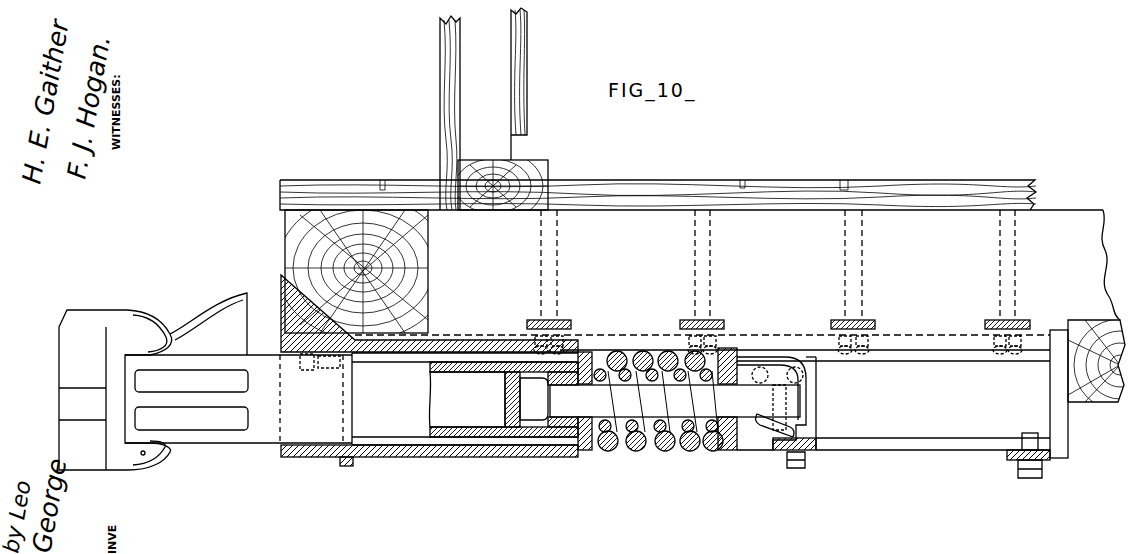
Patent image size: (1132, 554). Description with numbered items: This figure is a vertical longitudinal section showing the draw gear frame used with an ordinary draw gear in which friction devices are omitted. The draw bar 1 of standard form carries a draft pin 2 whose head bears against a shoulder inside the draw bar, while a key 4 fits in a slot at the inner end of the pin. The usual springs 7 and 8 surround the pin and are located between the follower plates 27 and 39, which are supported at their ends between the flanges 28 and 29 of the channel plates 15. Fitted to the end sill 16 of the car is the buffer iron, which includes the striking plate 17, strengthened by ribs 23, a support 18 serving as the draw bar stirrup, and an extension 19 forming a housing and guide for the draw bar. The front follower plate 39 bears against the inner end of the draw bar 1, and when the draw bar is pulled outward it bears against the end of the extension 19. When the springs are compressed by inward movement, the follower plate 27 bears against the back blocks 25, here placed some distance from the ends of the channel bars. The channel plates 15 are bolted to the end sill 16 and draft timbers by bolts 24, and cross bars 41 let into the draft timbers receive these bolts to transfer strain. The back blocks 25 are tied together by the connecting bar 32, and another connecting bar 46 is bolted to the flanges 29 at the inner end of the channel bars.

The draw bar 1 is at (465, 399).
The draft pin 2 is at (675, 401).
The key 4 is at (757, 378).
The spring 7 is at (624, 447).
The spring 8 is at (664, 452).
The channel plate 15 is at (855, 403).
The end sill 16 is at (363, 268).
The striking plate 17 is at (281, 322).
The support 18 is at (314, 448).
The extension 19 is at (491, 457).
The ribs 23 is at (429, 313).
The bolts 24 is at (862, 264).
The back blocks 25 is at (844, 422).
The follower plate 27 is at (733, 452).
The flange 28 is at (942, 362).
The flange 29 is at (957, 452).
The connecting bar 32 is at (812, 450).
The follower plate 39 is at (583, 452).
The cross bars 41 is at (875, 323).
The connecting bar 46 is at (1043, 460).